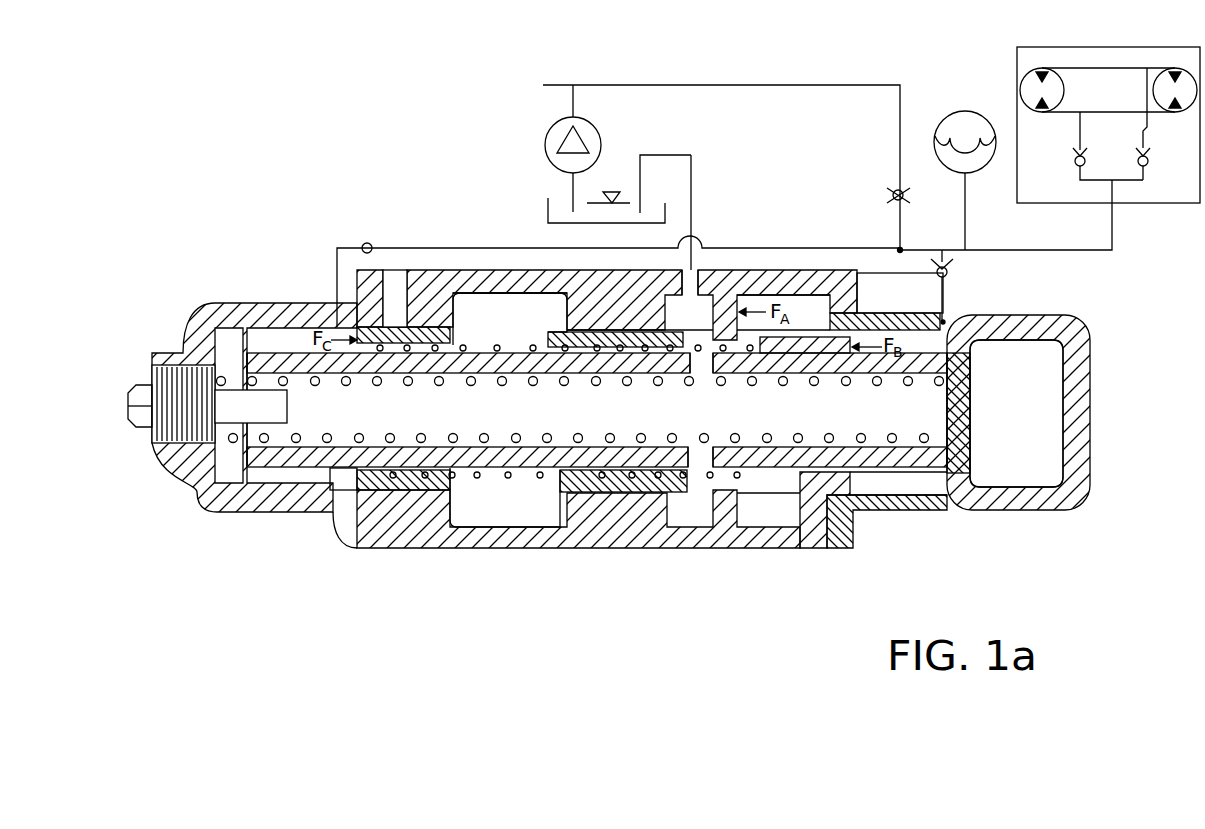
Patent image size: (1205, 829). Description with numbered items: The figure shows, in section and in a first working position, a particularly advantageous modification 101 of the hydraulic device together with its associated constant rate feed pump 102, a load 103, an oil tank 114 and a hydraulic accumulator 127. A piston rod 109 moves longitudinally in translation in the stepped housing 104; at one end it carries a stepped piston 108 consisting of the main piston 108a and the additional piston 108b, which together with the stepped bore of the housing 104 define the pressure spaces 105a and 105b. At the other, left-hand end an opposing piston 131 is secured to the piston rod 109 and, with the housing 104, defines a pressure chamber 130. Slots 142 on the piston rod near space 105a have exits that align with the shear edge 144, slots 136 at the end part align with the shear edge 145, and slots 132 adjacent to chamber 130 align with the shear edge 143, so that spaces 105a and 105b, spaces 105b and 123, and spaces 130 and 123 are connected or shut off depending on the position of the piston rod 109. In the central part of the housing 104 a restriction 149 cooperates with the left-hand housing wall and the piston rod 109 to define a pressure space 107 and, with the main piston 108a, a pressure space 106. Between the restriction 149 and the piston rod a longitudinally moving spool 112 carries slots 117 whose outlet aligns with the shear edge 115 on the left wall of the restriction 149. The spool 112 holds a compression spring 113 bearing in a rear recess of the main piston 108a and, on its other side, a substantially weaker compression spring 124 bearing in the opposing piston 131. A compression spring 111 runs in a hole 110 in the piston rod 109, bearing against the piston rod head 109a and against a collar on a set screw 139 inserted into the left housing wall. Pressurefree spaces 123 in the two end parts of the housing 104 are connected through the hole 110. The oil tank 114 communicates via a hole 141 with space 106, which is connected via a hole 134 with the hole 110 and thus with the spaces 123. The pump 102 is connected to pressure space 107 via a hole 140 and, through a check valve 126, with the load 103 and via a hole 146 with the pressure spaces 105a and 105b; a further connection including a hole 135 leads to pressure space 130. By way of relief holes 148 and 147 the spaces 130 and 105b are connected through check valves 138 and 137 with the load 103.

The modification of the device 101 is at (755, 572).
The constant rate feed pump 102 is at (592, 142).
The load 103 is at (1182, 188).
The housing 104 is at (410, 530).
The pressure space A 105a is at (773, 300).
The pressure space B 105b is at (945, 322).
The pressure space 106 is at (698, 313).
The pressure space 107 is at (473, 305).
The stepped piston 108 is at (830, 340).
The main piston 108a is at (738, 295).
The additional piston 108b is at (870, 335).
The piston rod 109 is at (393, 363).
The piston rod head 109a is at (948, 385).
The hole 110 is at (315, 427).
The compression spring 111 is at (437, 385).
The spool 112 is at (582, 353).
The compression spring 113 is at (778, 335).
The oil tank 114 is at (616, 212).
The shear edge 115 is at (570, 333).
The slots 117 is at (625, 330).
The pressurefree spaces 123 is at (223, 350).
The compression spring 124 is at (493, 350).
The check valve 126 is at (893, 190).
The hydraulic accumulator 127 is at (966, 136).
The pressure chamber C 130 is at (277, 409).
The opposing piston 131 is at (352, 317).
The slots 132 is at (292, 350).
The hole 134 is at (702, 372).
The hole 135 is at (388, 287).
The slots 136 is at (880, 362).
The check valve 137 is at (940, 263).
The check valve 138 is at (367, 243).
The set screw 139 is at (167, 400).
The hole 140 is at (507, 270).
The hole 141 is at (696, 272).
The slots 142 is at (827, 352).
The shear edge 143 is at (300, 357).
The shear edge 144 is at (827, 330).
The shear edge 145 is at (977, 413).
The hole 146 is at (838, 302).
The relief hole 147 is at (977, 348).
The relief hole 148 is at (340, 345).
The restriction 149 is at (600, 507).